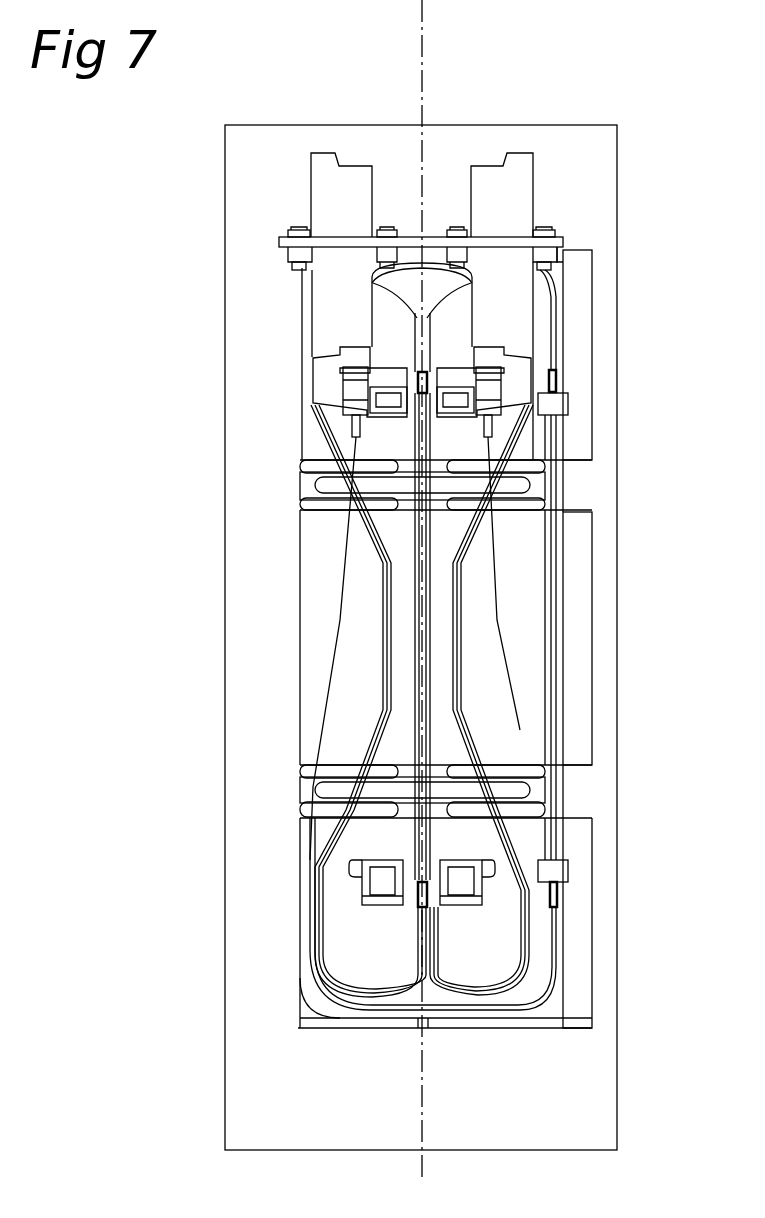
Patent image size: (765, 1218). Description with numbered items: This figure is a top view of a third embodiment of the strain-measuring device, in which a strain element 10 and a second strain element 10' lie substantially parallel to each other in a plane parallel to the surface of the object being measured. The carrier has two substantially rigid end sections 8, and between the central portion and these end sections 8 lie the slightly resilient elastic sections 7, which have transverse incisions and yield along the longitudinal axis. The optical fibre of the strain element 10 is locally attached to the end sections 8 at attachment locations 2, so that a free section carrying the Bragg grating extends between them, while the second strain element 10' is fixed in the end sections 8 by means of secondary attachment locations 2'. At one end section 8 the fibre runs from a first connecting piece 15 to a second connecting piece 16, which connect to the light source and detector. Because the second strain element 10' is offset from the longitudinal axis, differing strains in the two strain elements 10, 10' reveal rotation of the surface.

The attachment locations 2 is at (359, 627).
The secondary attachment locations 2' is at (602, 637).
The elastic sections 7 is at (307, 485).
The end sections 8 is at (567, 302).
The strain element 10 is at (360, 655).
The second strain element 10' is at (616, 637).
The first connecting piece 15 is at (510, 182).
The second connecting piece 16 is at (318, 182).